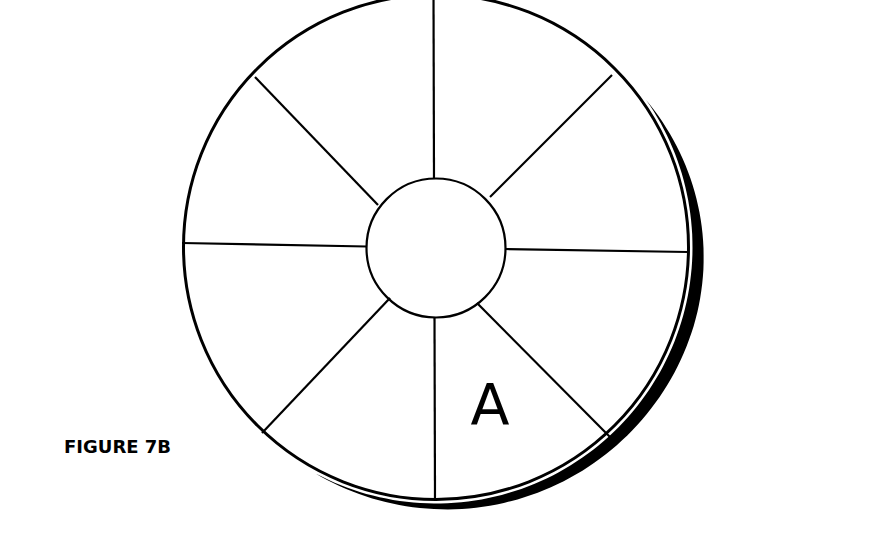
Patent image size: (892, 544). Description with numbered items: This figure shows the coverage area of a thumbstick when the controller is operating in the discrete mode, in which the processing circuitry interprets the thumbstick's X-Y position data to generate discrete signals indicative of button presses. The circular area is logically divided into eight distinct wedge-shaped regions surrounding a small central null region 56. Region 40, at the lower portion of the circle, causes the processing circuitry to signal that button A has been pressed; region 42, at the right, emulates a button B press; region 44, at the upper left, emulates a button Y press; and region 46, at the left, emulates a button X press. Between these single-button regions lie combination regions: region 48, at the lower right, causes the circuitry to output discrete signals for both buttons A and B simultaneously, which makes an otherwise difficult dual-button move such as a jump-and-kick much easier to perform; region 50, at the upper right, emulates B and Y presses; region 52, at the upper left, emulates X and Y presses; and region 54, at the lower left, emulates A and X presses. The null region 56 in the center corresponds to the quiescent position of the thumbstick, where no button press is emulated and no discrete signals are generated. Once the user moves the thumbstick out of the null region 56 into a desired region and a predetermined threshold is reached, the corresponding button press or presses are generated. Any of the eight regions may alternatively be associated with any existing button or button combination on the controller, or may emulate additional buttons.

The region 40 is at (562, 474).
The region 42 is at (676, 160).
The region 44 is at (298, 40).
The region 46 is at (194, 322).
The region 48 is at (680, 350).
The region 50 is at (577, 40).
The region 52 is at (193, 181).
The region 54 is at (298, 462).
The null region 56 is at (505, 222).